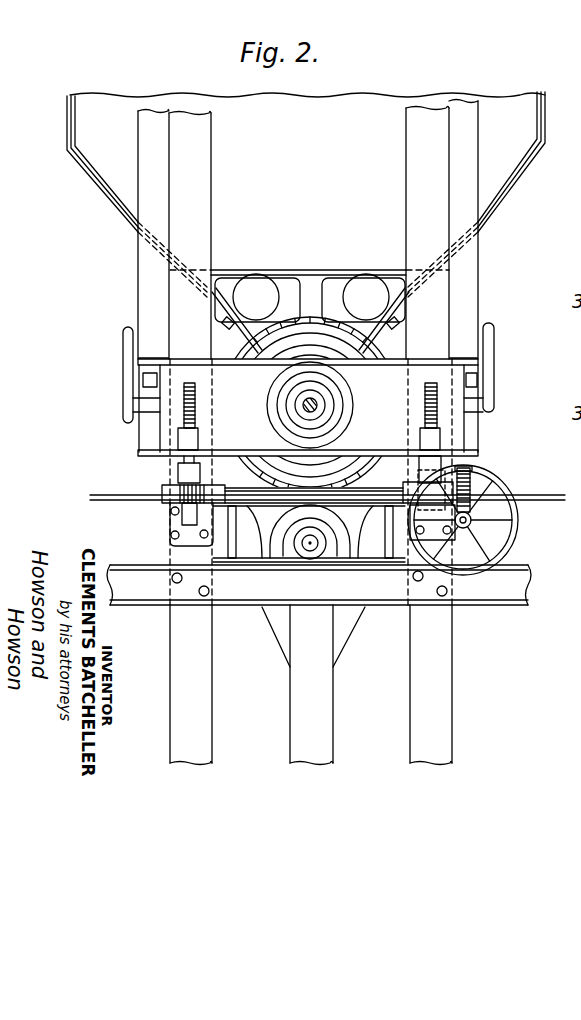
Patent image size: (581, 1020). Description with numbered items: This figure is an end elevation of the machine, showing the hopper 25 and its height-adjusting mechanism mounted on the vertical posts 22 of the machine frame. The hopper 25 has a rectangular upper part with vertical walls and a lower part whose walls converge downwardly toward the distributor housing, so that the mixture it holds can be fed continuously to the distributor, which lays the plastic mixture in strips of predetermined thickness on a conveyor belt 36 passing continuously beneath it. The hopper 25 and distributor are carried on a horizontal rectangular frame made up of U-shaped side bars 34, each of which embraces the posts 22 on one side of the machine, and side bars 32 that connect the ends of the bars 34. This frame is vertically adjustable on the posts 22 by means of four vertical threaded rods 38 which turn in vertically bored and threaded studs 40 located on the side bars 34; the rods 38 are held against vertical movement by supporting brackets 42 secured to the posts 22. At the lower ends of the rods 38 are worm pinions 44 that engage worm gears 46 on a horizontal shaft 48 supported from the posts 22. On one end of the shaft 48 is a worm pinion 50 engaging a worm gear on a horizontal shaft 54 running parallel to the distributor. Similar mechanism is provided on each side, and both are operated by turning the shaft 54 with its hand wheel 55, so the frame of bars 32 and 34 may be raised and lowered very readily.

The vertical posts 22 is at (175, 303).
The hopper 25 is at (228, 100).
The side bars 32 is at (473, 393).
The side bars 34 is at (383, 372).
The conveyor belt 36 is at (90, 500).
The vertical threaded rods 38 is at (190, 384).
The threaded studs 40 is at (178, 440).
The supporting brackets 42 is at (186, 520).
The worm pinions 44 is at (165, 498).
The worm gears 46 is at (180, 492).
The horizontal shaft 48 is at (283, 493).
The worm pinion 50 is at (500, 477).
The horizontal shaft 54 is at (472, 516).
The hand wheel 55 is at (515, 546).